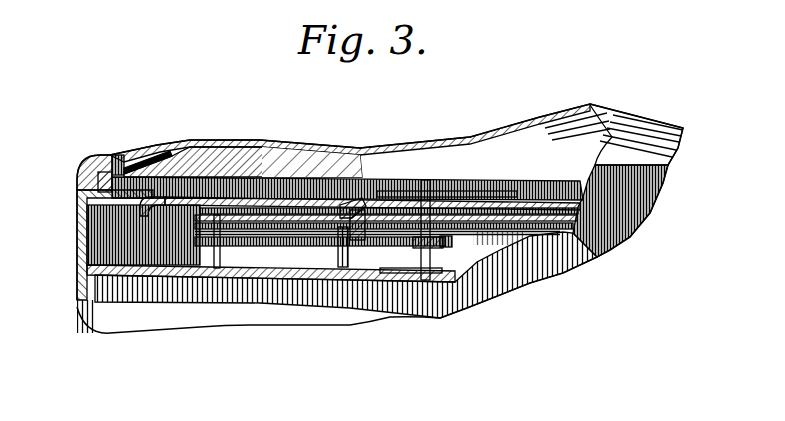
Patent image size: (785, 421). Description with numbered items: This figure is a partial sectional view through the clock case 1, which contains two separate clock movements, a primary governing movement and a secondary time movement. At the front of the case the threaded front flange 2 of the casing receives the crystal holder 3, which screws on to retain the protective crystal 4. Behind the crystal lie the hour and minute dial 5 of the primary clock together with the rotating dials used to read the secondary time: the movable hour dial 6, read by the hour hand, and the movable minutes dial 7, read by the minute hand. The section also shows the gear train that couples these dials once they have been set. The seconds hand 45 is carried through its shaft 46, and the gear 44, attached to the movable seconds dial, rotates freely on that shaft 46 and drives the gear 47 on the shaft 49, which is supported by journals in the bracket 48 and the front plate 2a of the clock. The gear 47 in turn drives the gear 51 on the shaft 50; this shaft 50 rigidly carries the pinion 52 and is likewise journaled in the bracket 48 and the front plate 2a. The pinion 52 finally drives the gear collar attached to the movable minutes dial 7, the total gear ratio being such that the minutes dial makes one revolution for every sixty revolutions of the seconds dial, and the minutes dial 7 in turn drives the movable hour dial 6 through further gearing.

The clock case 1 is at (170, 322).
The threaded front flange 2 is at (103, 183).
The front plate 2a is at (195, 296).
The crystal holder 3 is at (100, 158).
The protective crystal 4 is at (591, 104).
The hour and minute dial 5 is at (125, 155).
The movable hour dial 6 is at (166, 152).
The movable minutes dial 7 is at (190, 184).
The gear 44 is at (443, 248).
The seconds hand 45 is at (487, 193).
The shaft 46 is at (428, 200).
The gear 47 is at (384, 250).
The bracket 48 is at (366, 184).
The shaft 49 is at (332, 246).
The shaft 50 is at (222, 285).
The gear 51 is at (273, 247).
The pinion 52 is at (234, 180).